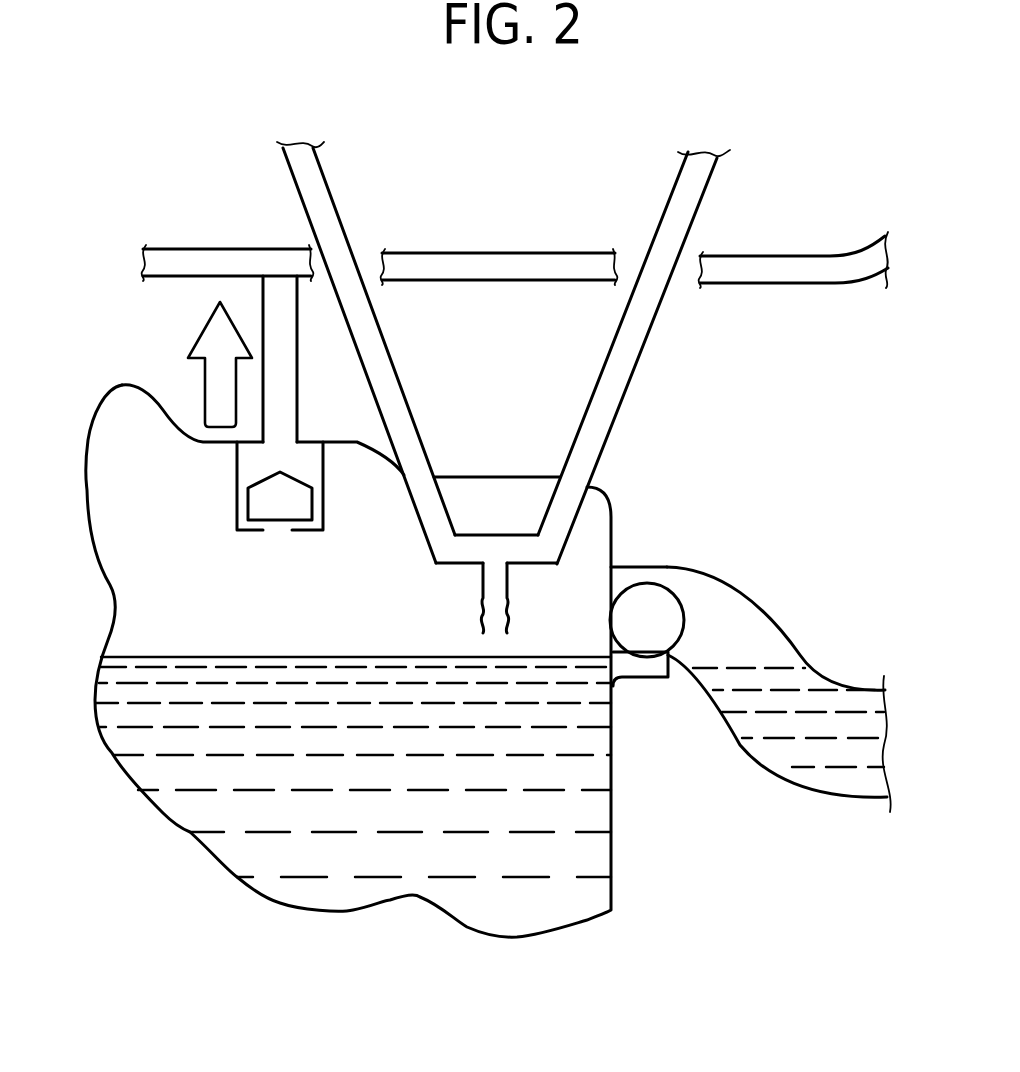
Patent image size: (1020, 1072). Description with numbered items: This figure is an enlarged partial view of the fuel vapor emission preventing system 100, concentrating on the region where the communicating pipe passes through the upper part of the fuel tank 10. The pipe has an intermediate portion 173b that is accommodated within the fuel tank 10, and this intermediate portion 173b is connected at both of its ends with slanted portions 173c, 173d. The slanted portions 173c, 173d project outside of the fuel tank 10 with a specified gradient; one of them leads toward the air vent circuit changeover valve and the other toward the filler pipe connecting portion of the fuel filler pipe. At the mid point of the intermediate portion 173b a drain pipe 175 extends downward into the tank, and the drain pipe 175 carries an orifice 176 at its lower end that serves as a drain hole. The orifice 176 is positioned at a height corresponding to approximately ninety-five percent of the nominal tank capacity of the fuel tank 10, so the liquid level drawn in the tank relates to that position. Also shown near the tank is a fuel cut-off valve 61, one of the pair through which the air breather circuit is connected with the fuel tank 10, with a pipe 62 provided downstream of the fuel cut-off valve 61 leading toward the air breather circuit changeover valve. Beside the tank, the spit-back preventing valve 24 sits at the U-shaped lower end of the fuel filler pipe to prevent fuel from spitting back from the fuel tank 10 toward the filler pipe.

The ink jet recording apparatus 100 is at (127, 198).
The fuel tank 10 is at (613, 783).
The spit-back preventing valve 24 is at (665, 616).
The fuel cut-off valve 61 is at (260, 505).
The pipe 62 is at (497, 262).
The intermediate portion 173b is at (455, 553).
The slanted portion 173c is at (315, 205).
The slanted portion 173d is at (620, 383).
The drain pipe 175 is at (483, 585).
The orifice 176 is at (507, 608).